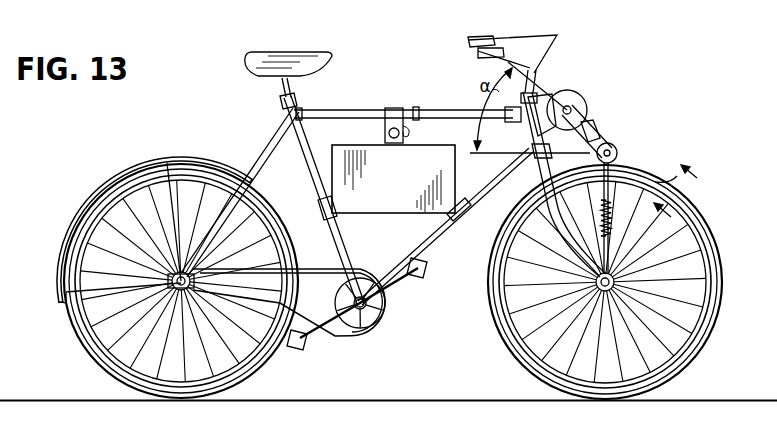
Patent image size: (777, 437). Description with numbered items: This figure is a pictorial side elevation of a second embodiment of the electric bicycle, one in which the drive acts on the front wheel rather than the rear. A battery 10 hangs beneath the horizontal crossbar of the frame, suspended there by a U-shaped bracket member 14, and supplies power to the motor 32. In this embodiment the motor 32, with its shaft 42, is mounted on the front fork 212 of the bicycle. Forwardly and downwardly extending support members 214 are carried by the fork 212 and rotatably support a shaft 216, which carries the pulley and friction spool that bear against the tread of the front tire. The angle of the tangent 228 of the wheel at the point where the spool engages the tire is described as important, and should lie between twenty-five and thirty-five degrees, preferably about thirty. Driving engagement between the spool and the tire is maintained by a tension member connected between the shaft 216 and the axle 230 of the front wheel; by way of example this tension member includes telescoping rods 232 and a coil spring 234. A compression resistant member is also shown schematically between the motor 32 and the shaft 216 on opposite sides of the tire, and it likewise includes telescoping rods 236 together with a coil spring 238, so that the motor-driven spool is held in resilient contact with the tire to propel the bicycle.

The battery 10 is at (390, 213).
The front fork 212 is at (468, 221).
The support members 214 is at (530, 126).
The motor 32 is at (560, 92).
The shaft of the motor 42 is at (571, 104).
The telescoping rods 236 is at (607, 147).
The coil spring 238 is at (600, 130).
The shaft 216 is at (618, 153).
The telescoping rods 232 is at (677, 176).
The tangent of the wheel 228 is at (604, 165).
The coil spring 234 is at (613, 218).
The axle of the front wheel 230 is at (640, 292).
The U-shaped bracket member 14 is at (689, 200).